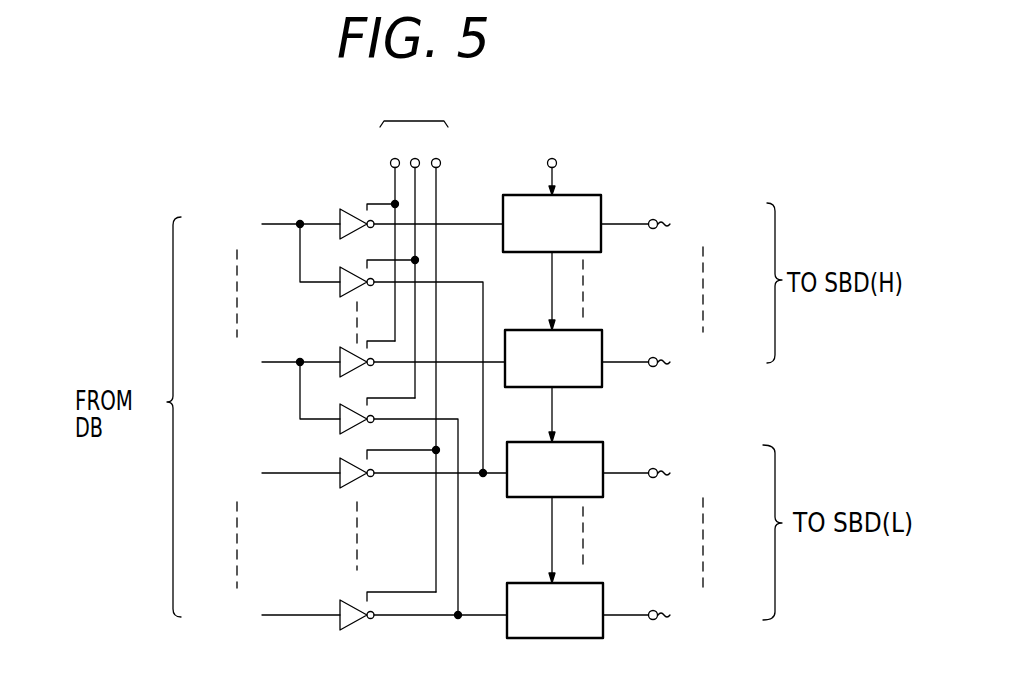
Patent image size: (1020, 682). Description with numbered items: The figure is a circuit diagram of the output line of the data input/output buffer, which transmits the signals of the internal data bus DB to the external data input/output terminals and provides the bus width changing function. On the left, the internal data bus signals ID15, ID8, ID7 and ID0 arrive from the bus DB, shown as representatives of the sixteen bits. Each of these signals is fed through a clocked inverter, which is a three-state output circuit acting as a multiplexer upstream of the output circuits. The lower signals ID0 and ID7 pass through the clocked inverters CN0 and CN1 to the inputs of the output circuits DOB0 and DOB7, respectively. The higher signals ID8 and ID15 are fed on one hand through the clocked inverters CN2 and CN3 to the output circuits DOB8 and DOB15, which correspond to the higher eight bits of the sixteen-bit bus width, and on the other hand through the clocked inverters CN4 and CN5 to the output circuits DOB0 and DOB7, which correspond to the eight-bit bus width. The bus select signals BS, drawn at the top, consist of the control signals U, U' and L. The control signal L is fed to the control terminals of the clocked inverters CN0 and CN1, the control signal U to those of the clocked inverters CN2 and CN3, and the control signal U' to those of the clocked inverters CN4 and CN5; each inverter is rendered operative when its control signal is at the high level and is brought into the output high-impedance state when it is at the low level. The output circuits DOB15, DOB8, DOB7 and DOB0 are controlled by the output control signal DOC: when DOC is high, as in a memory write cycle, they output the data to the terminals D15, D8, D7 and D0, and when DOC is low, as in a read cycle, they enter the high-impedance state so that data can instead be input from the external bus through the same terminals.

The bus width control signal BS is at (414, 107).
The control signal U is at (393, 235).
The control signal U' is at (416, 264).
The control signal L is at (437, 361).
The output control signal DOC is at (549, 162).
The internal data bus signal ID15 is at (271, 248).
The internal data bus signal ID8 is at (272, 382).
The internal data bus signal ID7 is at (274, 475).
The internal data bus signal ID0 is at (273, 618).
The clocked inverter CN0 is at (402, 600).
The clocked inverter CN1 is at (390, 479).
The clocked inverter CN2 is at (398, 345).
The clocked inverter CN3 is at (399, 211).
The clocked inverter CN4 is at (367, 508).
The clocked inverter CN5 is at (387, 368).
The output circuit DOB15 is at (552, 262).
The output circuit DOB8 is at (553, 386).
The output circuit DOB7 is at (555, 512).
The output circuit DOB0 is at (555, 610).
The data input/output terminal D15 is at (654, 223).
The data input/output terminal D8 is at (651, 361).
The data input/output terminal D7 is at (651, 472).
The data input/output terminal D0 is at (651, 614).